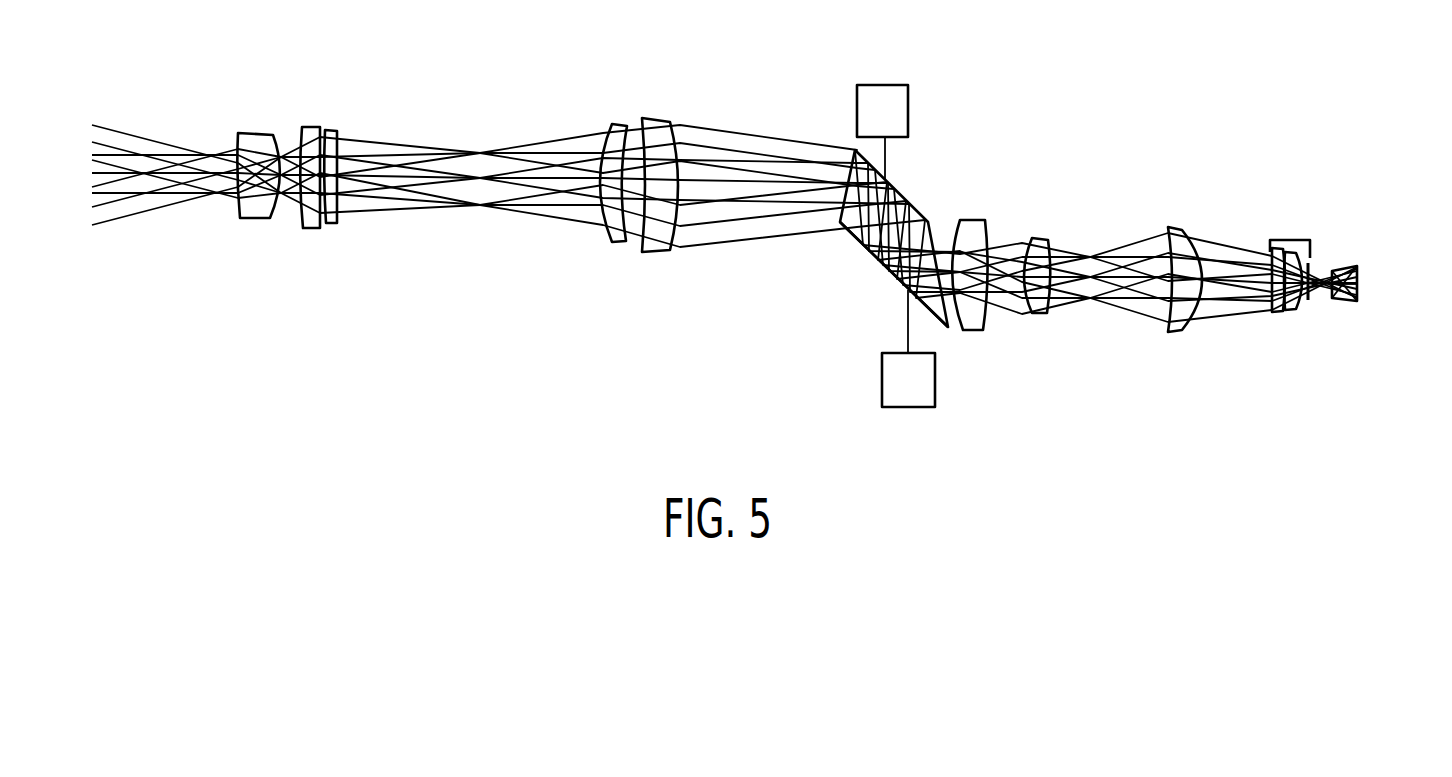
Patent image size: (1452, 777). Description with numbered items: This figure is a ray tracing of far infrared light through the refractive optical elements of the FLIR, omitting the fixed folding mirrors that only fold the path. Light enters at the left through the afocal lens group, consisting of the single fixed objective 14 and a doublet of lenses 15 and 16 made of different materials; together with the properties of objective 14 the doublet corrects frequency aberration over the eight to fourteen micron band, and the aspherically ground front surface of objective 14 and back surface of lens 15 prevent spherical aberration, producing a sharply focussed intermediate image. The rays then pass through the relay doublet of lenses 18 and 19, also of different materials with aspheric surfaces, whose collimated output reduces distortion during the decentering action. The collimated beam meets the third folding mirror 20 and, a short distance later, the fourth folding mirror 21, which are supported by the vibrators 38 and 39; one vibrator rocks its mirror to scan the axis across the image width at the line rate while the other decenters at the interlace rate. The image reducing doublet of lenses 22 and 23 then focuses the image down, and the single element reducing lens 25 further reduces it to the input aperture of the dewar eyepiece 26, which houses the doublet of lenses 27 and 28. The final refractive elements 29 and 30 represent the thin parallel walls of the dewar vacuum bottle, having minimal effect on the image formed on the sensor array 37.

The fixed objective 14 is at (252, 132).
The doublet lens 15 is at (310, 127).
The doublet lens 16 is at (336, 130).
The relay lens 18 is at (612, 123).
The relay lens 19 is at (657, 118).
The third folding mirror 20 is at (910, 203).
The fourth folding mirror 21 is at (883, 264).
The image reducing doublet lens 22 is at (973, 331).
The image reducing doublet lens 23 is at (1035, 238).
The single element reducing lens 25 is at (1172, 227).
The dewar eyepiece 26 is at (1297, 240).
The eyepiece lens 27 is at (1280, 312).
The eyepiece lens 28 is at (1298, 311).
The vacuum bottle wall 29 is at (1309, 302).
The vacuum bottle wall 30 is at (1333, 300).
The sensor array 37 is at (1357, 270).
The vibrator 38 is at (866, 85).
The vibrator 39 is at (882, 390).